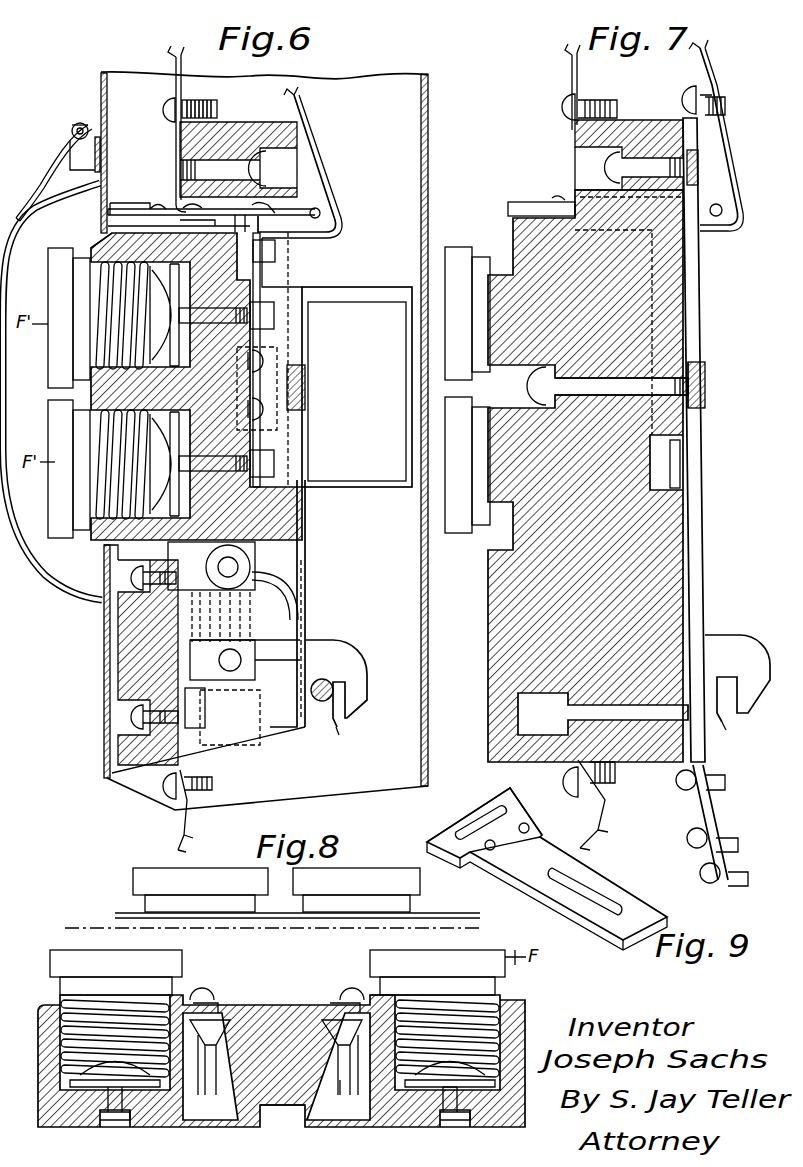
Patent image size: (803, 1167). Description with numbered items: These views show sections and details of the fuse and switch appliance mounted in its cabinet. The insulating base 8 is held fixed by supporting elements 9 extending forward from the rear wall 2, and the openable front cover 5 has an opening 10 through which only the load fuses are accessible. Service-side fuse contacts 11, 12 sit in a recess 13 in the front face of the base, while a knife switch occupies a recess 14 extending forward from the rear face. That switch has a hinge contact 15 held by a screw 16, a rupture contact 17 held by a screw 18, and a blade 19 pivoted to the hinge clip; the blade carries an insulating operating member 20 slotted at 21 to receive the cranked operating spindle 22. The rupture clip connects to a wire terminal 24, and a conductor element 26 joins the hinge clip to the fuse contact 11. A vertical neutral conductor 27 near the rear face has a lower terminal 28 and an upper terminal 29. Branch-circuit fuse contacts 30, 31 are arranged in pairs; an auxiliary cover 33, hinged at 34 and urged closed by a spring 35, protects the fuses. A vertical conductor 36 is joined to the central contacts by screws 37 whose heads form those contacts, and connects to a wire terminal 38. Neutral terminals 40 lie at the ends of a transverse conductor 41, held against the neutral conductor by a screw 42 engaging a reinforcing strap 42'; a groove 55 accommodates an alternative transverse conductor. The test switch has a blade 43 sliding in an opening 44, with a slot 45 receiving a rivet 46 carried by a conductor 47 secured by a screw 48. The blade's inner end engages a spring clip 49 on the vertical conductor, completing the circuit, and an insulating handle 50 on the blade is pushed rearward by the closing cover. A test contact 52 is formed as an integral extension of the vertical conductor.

In FIG. 6, the rear wall 2 is at (428, 169).
In FIG. 6, the openable front cover 5 is at (104, 684).
In FIG. 8, the openable front cover 5 is at (94, 926).
In FIG. 6, the unitary base 8 is at (285, 524).
In FIG. 7, the unitary base 8 is at (527, 614).
In FIG. 8, the unitary base 8 is at (58, 1125).
In FIG. 6, the supporting element 9 is at (358, 287).
In FIG. 6, the opening 10 is at (104, 560).
In FIG. 8, the fuse contact 11 is at (470, 1120).
In FIG. 8, the fuse contact 12 is at (505, 1010).
In FIG. 8, the recess 13 is at (500, 996).
In FIG. 6, the recess 14 is at (305, 585).
In FIG. 8, the recess 14 is at (333, 1122).
In FIG. 6, the hinge contact 15 is at (250, 548).
In FIG. 8, the hinge contact 15 is at (354, 1096).
In FIG. 6, the screw 16 is at (132, 576).
In FIG. 6, the rupture contact 17 is at (255, 730).
In FIG. 6, the screw 18 is at (135, 722).
In FIG. 6, the blade 19 is at (240, 745).
In FIG. 6, the operating member 20 is at (355, 670).
In FIG. 7, the operating member 20 is at (752, 650).
In FIG. 6, the slot 21 is at (338, 730).
In FIG. 7, the slot 21 is at (736, 732).
In FIG. 6, the operating spindle 22 is at (322, 702).
In FIG. 6, the wire connecting terminal 24 is at (212, 810).
In FIG. 7, the wire connecting terminal 24 is at (605, 805).
In FIG. 6, the conductor element 26 is at (282, 601).
In FIG. 8, the conductor element 26 is at (370, 1122).
In FIG. 7, the neutral conductor 27 is at (698, 316).
In FIG. 8, the neutral conductor 27 is at (272, 1112).
In FIG. 7, the wire connecting terminal 28 is at (686, 795).
In FIG. 7, the wire connecting terminal 29 is at (690, 84).
In FIG. 6, the fuse contact 30 is at (137, 390).
In FIG. 6, the fuse contact 31 is at (110, 258).
In FIG. 6, the auxiliary cover 33 is at (62, 598).
In FIG. 6, the hinge 34 is at (80, 122).
In FIG. 6, the spring 35 is at (58, 160).
In FIG. 6, the conductor 36 is at (262, 282).
In FIG. 6, the screw 37 is at (226, 389).
In FIG. 6, the wire receiving terminal 38 is at (170, 104).
In FIG. 7, the wire receiving terminal 38 is at (566, 96).
In FIG. 6, the wire receiving terminal 40 is at (270, 420).
In FIG. 6, the transverse conductor 41 is at (280, 360).
In FIG. 7, the transverse conductor 41 is at (692, 365).
In FIG. 7, the screw 42 is at (607, 386).
In FIG. 6, the transverse strap 42' is at (313, 387).
In FIG. 7, the transverse strap 42' is at (725, 378).
In FIG. 6, the blade 43 is at (226, 200).
In FIG. 7, the blade 43 is at (570, 196).
In FIG. 9, the blade 43 is at (635, 932).
In FIG. 6, the opening 44 is at (179, 224).
In FIG. 9, the slot 45 is at (600, 898).
In FIG. 6, the rivet 46 is at (176, 198).
In FIG. 6, the conductor 47 is at (181, 150).
In FIG. 7, the conductor 47 is at (572, 90).
In FIG. 6, the screw 48 is at (224, 168).
In FIG. 6, the spring clip 49 is at (286, 198).
In FIG. 7, the spring clip 49 is at (714, 199).
In FIG. 6, the handle 50 is at (128, 208).
In FIG. 7, the handle 50 is at (518, 202).
In FIG. 9, the handle 50 is at (503, 796).
In FIG. 6, the contact 52 is at (305, 138).
In FIG. 7, the contact 52 is at (720, 160).
In FIG. 7, the groove 55 is at (681, 463).